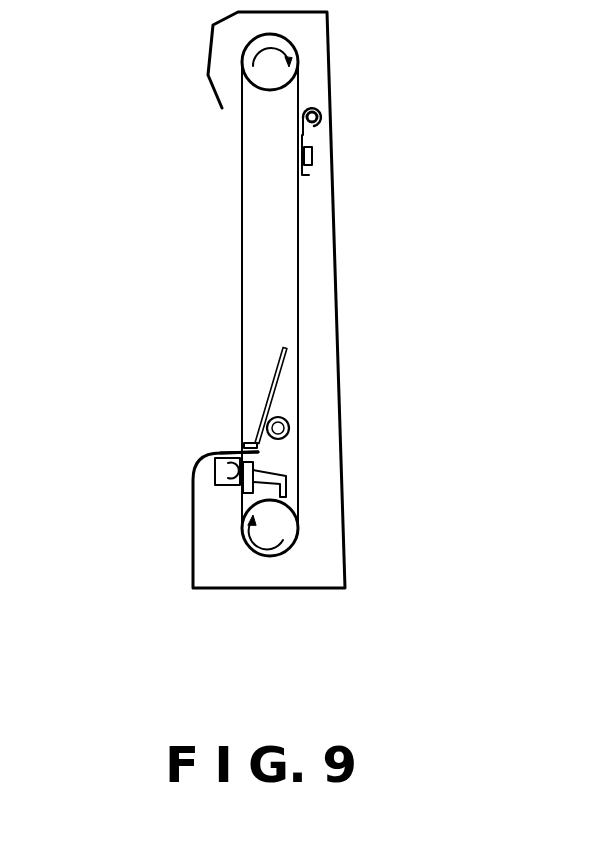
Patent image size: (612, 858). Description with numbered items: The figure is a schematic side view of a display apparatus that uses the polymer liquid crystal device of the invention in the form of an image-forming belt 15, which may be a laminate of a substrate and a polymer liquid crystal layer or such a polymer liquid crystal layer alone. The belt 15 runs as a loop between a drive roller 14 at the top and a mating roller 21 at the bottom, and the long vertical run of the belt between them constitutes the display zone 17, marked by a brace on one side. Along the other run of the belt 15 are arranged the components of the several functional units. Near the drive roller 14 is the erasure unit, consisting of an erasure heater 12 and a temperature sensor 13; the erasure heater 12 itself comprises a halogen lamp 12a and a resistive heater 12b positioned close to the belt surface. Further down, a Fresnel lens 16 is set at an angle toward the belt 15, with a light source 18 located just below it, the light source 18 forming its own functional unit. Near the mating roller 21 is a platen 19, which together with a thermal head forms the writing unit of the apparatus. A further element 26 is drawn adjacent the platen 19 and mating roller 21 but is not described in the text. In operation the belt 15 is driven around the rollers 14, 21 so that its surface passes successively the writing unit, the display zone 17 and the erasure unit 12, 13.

The erasure heater 12 is at (418, 82).
The halogen lamp 12a is at (313, 112).
The resistive heater 12b is at (318, 132).
The temperature sensor 13 is at (310, 157).
The drive roller 14 is at (297, 52).
The image-forming belt 15 is at (298, 296).
The Fresnel lens 16 is at (285, 348).
The display zone 17 is at (83, 110).
The light source 18 is at (286, 418).
The platen 19 is at (258, 449).
The mating roller 21 is at (298, 528).
The drive unit 26 is at (255, 472).